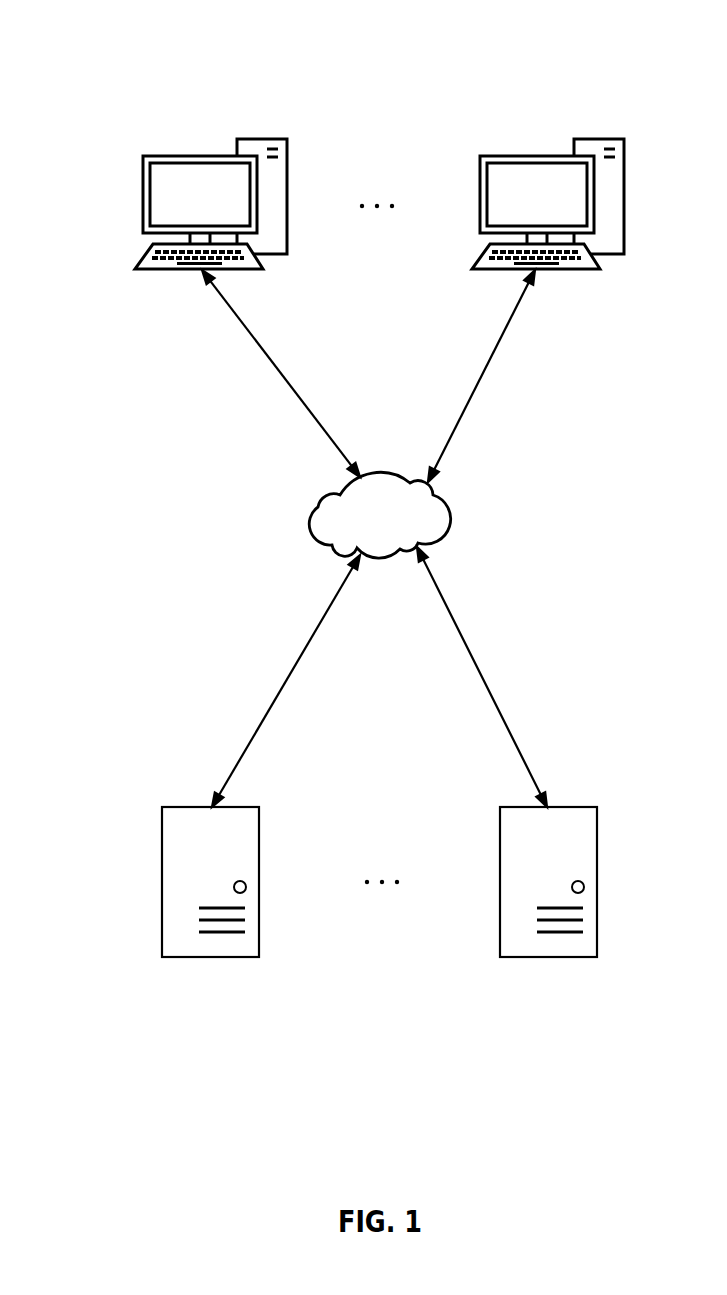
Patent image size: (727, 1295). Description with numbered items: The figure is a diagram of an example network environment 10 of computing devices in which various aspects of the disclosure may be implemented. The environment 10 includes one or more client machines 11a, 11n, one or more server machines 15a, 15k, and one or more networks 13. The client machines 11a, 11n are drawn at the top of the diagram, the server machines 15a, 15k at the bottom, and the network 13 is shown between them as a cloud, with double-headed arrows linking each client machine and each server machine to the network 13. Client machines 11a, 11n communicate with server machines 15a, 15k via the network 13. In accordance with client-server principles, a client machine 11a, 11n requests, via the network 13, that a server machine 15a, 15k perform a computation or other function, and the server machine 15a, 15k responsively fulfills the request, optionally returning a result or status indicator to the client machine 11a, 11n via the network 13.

The network environment 10 is at (226, 62).
The client machine 11a is at (143, 203).
The client machine 11n is at (480, 203).
The network 13 is at (340, 493).
The server machine 15a is at (162, 880).
The server machine 15k is at (500, 880).